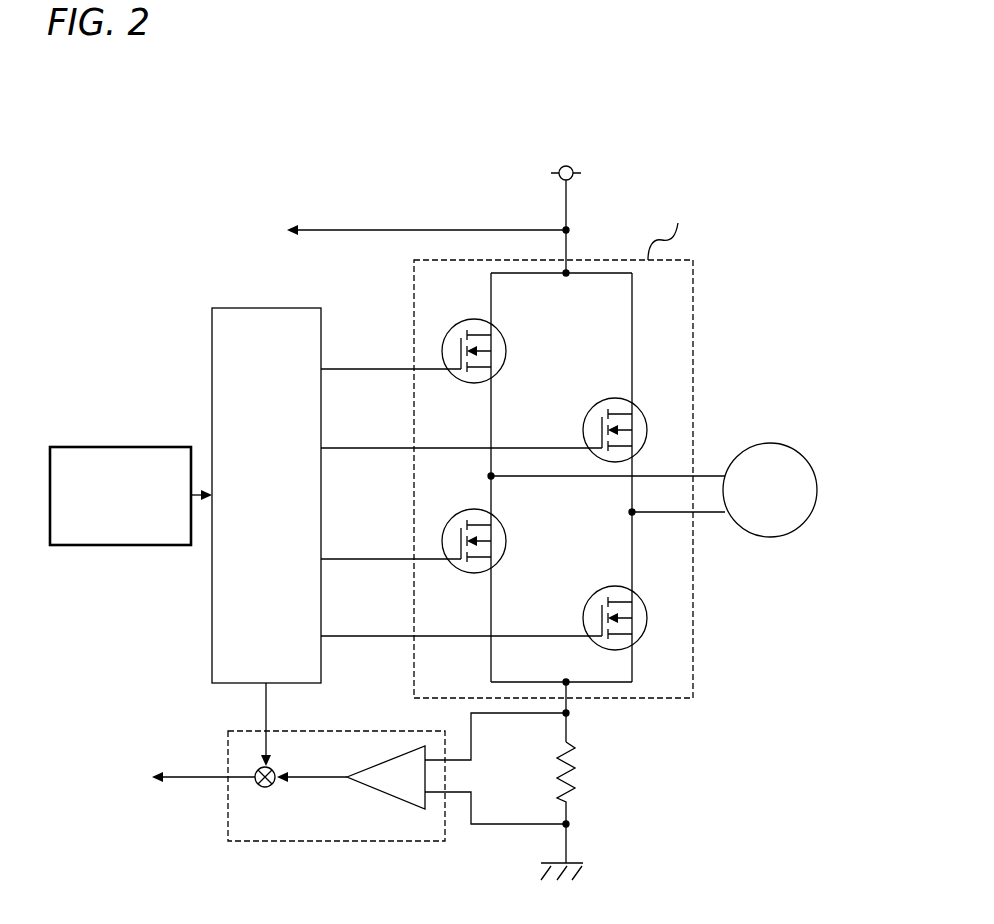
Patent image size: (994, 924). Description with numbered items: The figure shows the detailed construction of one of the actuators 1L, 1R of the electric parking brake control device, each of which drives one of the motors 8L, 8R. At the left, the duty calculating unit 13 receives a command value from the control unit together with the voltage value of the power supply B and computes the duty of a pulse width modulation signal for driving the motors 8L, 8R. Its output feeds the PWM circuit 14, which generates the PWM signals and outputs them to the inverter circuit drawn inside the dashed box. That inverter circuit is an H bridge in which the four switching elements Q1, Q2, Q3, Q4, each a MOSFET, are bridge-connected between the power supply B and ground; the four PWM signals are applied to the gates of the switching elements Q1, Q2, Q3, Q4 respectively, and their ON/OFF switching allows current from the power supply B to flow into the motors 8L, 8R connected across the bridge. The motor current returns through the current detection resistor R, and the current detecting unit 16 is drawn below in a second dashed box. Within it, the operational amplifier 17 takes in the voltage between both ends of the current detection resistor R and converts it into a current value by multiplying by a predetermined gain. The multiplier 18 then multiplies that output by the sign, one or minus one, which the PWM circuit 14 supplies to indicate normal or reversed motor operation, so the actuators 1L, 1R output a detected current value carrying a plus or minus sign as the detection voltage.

The actuator 1L is at (441, 502).
The actuator 1R is at (146, 162).
The duty calculating unit 13 is at (96, 447).
The PWM circuit 14 is at (238, 308).
The current detecting unit 16 is at (353, 872).
The operational amplifier 17 is at (383, 792).
The multiplier 18 is at (270, 790).
The motor 8L is at (780, 468).
The motor 8R is at (797, 420).
The switching element Q1 is at (491, 351).
The switching element Q2 is at (491, 541).
The switching element Q3 is at (632, 430).
The switching element Q4 is at (632, 618).
The current detection resistor R is at (573, 753).
The power supply B is at (565, 209).